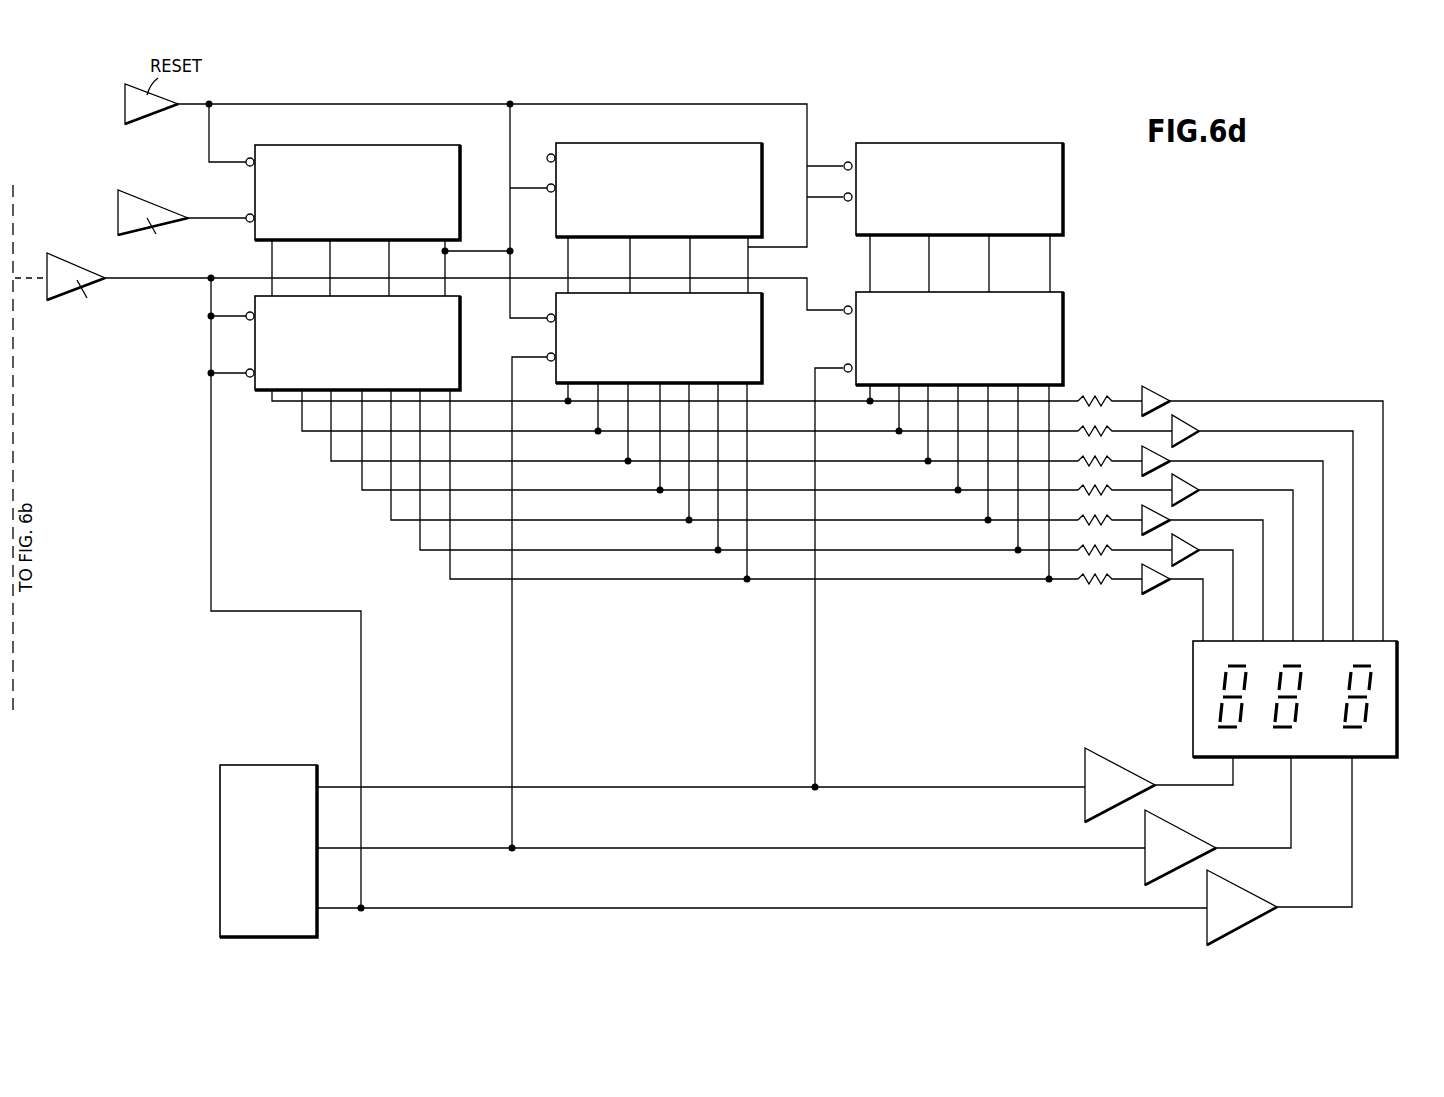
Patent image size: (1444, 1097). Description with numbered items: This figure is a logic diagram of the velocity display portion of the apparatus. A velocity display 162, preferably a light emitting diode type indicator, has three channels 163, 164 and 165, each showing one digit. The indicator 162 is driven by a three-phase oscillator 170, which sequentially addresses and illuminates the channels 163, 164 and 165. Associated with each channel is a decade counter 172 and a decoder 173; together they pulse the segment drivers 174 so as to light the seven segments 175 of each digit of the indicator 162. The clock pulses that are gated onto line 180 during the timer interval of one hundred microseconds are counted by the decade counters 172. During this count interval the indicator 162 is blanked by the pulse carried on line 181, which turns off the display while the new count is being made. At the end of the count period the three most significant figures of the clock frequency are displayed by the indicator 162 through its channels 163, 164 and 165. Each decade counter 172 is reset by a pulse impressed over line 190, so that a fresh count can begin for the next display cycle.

The reset line 190 is at (317, 103).
The decade counter 172 is at (412, 147).
The decoder 173 is at (459, 340).
The clock line 180 is at (213, 218).
The blanking pulse line 181 is at (188, 276).
The segment driver 174 is at (1168, 400).
The three-phase oscillator 170 is at (220, 784).
The velocity display 162 is at (1273, 774).
The first channel 163 is at (1200, 658).
The second channel 164 is at (1294, 750).
The third channel 165 is at (1385, 655).
The display segment 175 is at (1303, 664).